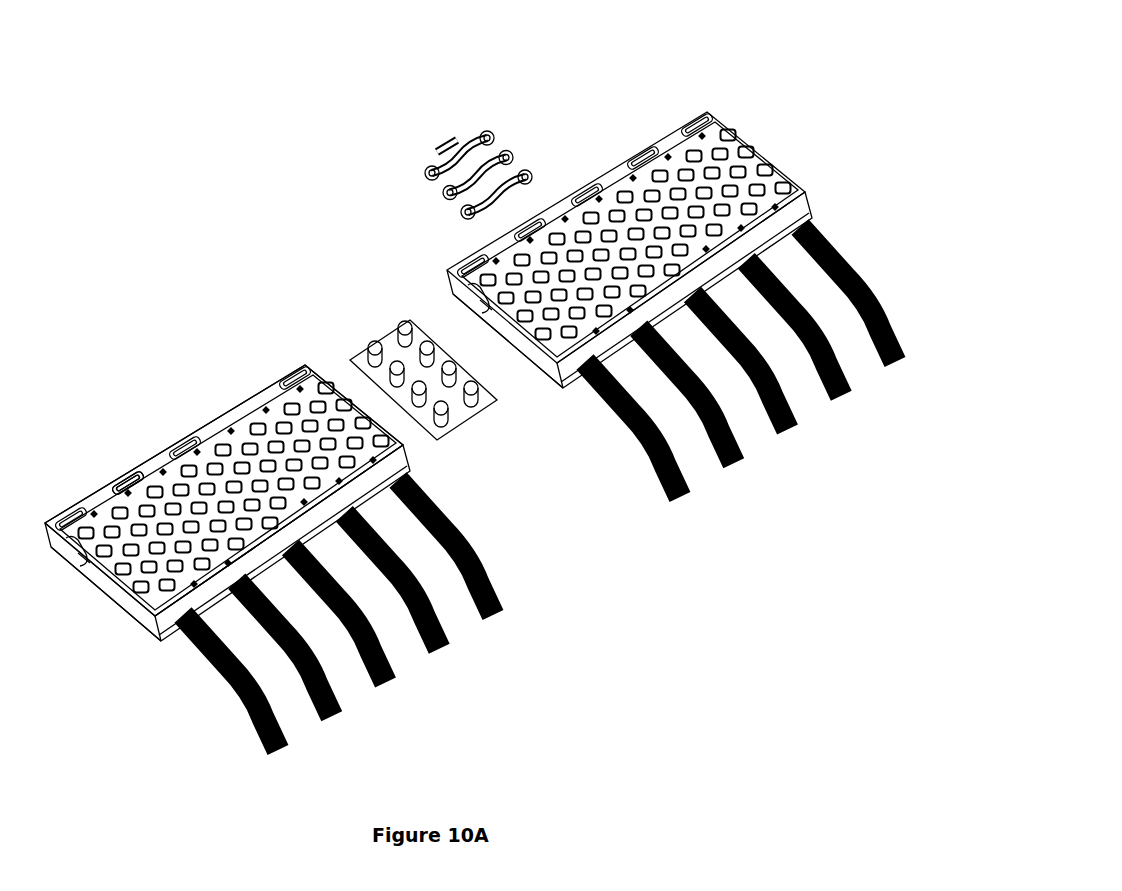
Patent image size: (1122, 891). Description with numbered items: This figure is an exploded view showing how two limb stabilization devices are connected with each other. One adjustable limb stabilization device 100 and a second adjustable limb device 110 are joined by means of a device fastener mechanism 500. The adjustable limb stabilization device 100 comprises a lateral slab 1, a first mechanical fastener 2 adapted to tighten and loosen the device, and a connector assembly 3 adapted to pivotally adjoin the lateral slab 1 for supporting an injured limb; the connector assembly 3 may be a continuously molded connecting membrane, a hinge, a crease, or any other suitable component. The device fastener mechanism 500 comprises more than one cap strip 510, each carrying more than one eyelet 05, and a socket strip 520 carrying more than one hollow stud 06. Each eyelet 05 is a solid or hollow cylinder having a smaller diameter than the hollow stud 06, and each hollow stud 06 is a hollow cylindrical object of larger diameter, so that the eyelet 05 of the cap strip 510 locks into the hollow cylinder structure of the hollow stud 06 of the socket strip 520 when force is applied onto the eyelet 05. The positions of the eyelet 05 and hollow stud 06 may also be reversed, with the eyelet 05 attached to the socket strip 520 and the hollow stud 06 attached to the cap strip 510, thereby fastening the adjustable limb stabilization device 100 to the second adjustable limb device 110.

The lateral slab 1 is at (671, 261).
The adjustable limb stabilization device 100 is at (269, 540).
The second adjustable limb device 110 is at (657, 147).
The first mechanical fastener 2 is at (120, 477).
The connector assembly 3 is at (852, 250).
The device fastener mechanism 500 is at (373, 313).
The cap strip 510 is at (423, 143).
The eyelet 05 is at (423, 185).
The socket strip 520 is at (481, 505).
The hollow stud 06 is at (480, 387).